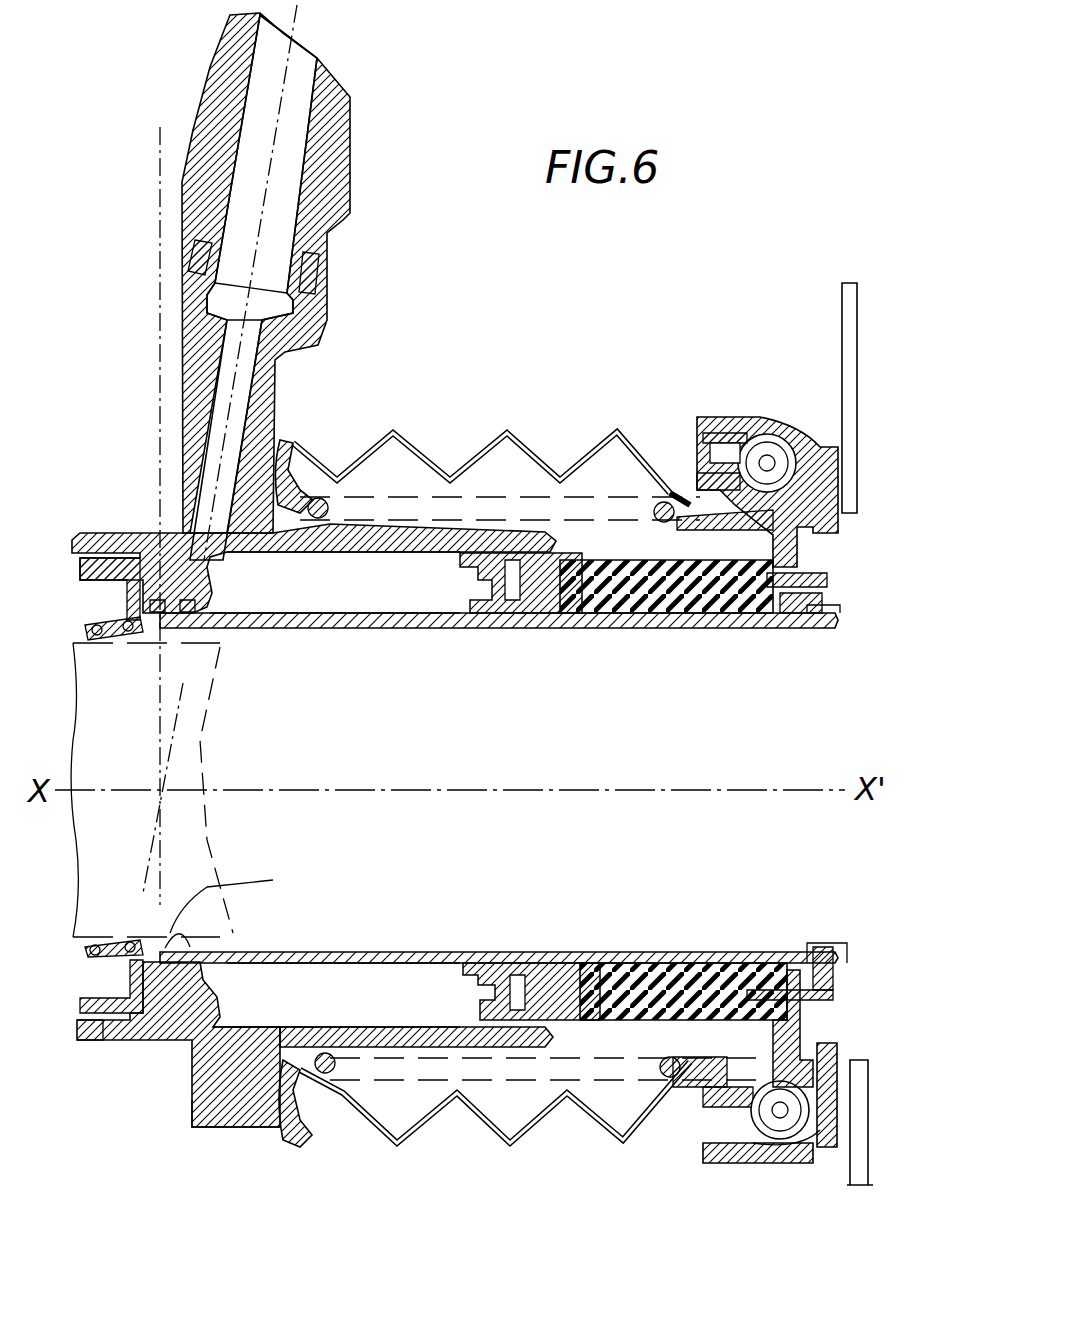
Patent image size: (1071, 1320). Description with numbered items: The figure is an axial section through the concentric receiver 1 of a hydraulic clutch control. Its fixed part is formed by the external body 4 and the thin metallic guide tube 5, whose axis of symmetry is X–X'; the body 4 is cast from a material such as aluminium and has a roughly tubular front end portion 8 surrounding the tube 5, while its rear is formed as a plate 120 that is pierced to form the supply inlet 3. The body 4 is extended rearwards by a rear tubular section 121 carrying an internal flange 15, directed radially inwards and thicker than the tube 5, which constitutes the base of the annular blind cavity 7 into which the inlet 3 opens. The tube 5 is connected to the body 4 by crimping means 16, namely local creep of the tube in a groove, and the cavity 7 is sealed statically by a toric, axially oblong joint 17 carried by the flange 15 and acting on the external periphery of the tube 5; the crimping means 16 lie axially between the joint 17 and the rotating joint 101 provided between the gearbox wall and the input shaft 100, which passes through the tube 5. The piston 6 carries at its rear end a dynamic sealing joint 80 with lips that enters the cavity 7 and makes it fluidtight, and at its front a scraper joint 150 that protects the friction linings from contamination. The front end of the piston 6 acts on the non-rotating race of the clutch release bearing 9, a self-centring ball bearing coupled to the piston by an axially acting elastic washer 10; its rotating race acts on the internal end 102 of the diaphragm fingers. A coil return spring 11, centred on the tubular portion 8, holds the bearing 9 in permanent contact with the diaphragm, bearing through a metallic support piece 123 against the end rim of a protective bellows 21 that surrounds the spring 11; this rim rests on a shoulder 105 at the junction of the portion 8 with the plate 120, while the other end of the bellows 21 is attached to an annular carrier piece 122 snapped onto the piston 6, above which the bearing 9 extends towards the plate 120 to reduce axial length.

The concentric receiver 1 is at (380, 302).
The supply inlet 3 is at (215, 304).
The external body 4 is at (147, 530).
The guide tube 5 is at (726, 628).
The piston 6 is at (683, 970).
The cavity 7 is at (337, 587).
The front end portion 8 is at (395, 1028).
The clutch release bearing 9 is at (742, 412).
The elastic washer 10 is at (812, 1018).
The return spring 11 is at (327, 1100).
The internal flange 15 is at (170, 1005).
The crimping means 16 is at (192, 795).
The static sealing joint 17 is at (205, 630).
The protective bellows 21 is at (385, 425).
The dynamic sealing joint 80 is at (470, 582).
The input shaft 100 is at (207, 1128).
The rotating joint 101 is at (98, 1032).
The internal end of diaphragm fingers 102 is at (840, 335).
The shoulder 105 is at (295, 1142).
The plate 120 is at (182, 398).
The rear tubular section 121 is at (80, 1042).
The carrier piece 122 is at (830, 1010).
The support piece 123 is at (290, 455).
The scraper joint 150 is at (800, 1000).